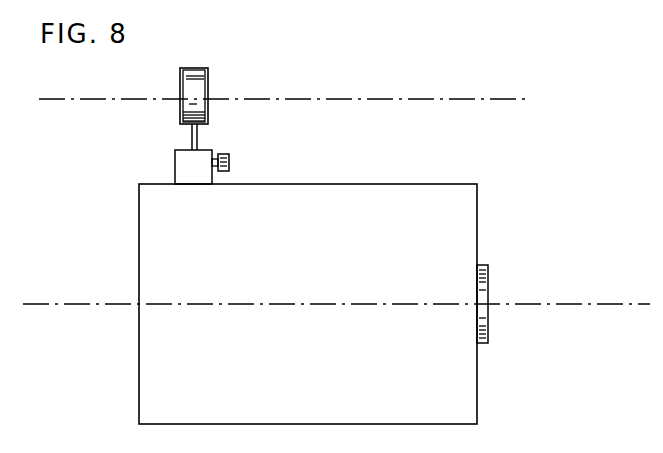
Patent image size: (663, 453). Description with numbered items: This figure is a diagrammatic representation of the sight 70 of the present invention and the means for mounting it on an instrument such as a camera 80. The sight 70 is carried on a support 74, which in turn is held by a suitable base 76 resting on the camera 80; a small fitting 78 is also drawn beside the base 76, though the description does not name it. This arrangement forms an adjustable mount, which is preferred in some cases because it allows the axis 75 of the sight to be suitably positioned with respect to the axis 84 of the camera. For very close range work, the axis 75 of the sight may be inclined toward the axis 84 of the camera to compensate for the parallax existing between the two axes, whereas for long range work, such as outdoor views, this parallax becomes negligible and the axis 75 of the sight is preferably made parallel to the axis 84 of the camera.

The sight 70 is at (209, 78).
The support 74 is at (199, 138).
The axis of the sight 75 is at (457, 99).
The base 76 is at (177, 165).
The fitting 78 is at (232, 164).
The camera 80 is at (312, 184).
The axis of the camera 84 is at (585, 303).